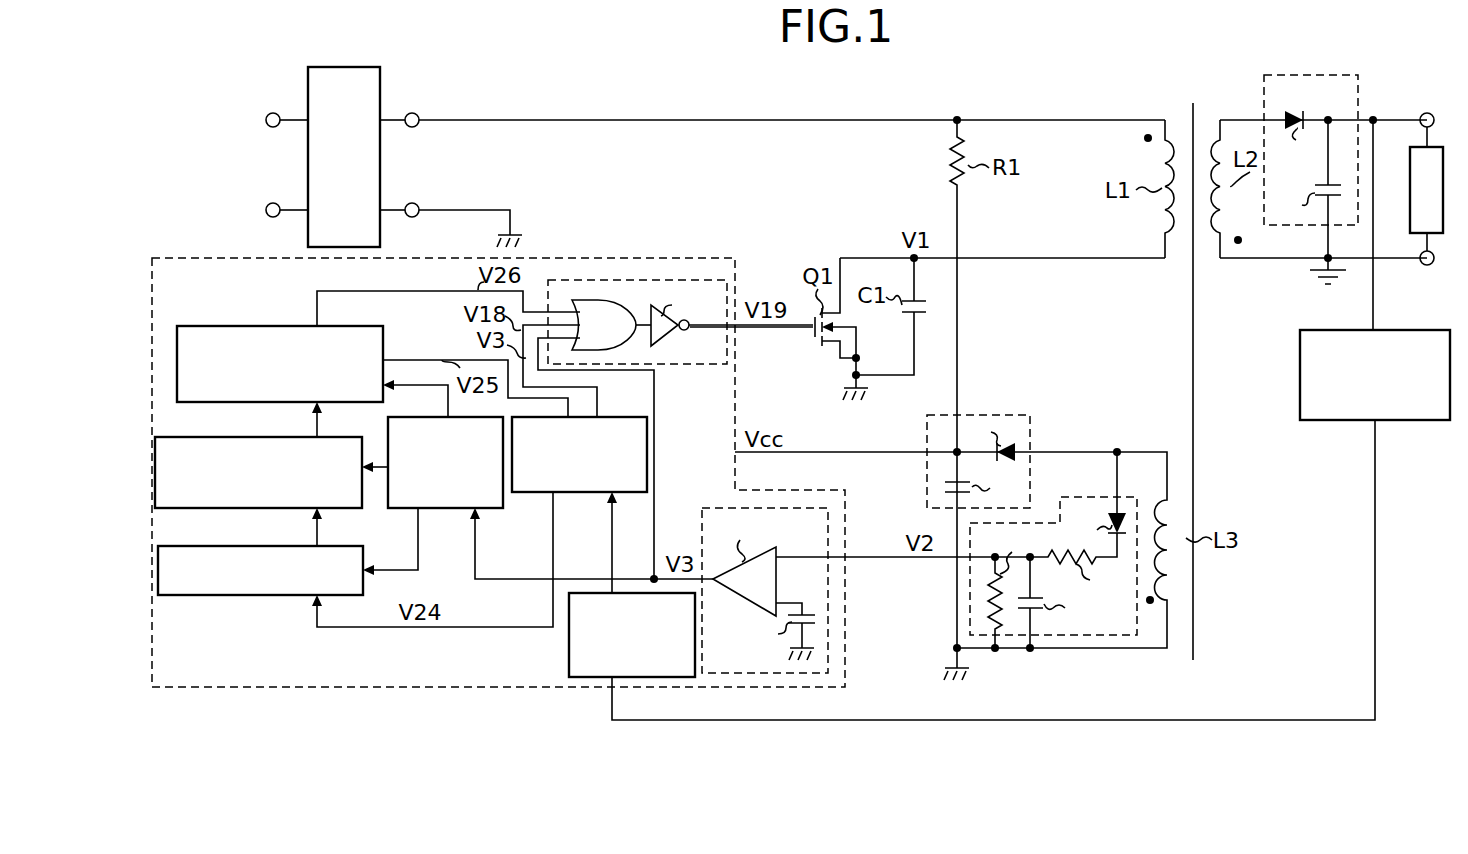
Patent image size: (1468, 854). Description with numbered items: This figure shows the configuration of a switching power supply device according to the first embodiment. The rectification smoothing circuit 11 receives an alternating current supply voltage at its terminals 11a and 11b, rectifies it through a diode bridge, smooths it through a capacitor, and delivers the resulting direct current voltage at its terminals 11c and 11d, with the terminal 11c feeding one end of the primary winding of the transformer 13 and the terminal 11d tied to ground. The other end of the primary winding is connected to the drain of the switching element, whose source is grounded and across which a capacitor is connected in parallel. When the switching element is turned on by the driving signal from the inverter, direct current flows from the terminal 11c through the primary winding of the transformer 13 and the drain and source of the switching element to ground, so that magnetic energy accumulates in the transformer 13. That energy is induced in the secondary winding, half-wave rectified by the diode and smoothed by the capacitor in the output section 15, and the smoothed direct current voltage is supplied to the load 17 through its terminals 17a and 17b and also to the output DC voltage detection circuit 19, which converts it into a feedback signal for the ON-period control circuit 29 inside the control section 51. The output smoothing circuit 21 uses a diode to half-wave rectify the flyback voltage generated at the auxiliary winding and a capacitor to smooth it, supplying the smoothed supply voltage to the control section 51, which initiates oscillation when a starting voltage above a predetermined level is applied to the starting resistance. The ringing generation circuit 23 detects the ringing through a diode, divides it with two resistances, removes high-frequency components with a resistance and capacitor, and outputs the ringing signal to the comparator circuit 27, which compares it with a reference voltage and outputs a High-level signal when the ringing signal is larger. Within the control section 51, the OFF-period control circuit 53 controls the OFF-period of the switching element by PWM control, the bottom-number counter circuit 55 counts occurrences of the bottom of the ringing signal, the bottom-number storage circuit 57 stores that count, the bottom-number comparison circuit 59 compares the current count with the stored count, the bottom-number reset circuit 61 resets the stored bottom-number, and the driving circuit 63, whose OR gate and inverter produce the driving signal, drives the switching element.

The rectification smoothing circuit 11 is at (345, 67).
The input terminal 11a is at (273, 113).
The input terminal 11b is at (273, 203).
The terminal 11c is at (417, 113).
The output terminal 11d is at (417, 203).
The transformer 13 is at (1193, 105).
The output rectification smoothing circuit 15 is at (1303, 75).
The load 17 is at (1410, 205).
The output terminal 17a is at (1428, 113).
The output terminal 17b is at (1425, 266).
The output DC voltage detection circuit 19 is at (1329, 422).
The output smoothing circuit 21 is at (1004, 415).
The ringing generation circuit 23 is at (1103, 638).
The comparator circuit 27 is at (712, 506).
The ON-period control circuit 29 is at (569, 654).
The control section 51 is at (610, 258).
The OFF-period control circuit 53 is at (580, 493).
The bottom-number counter circuit 55 is at (398, 509).
The bottom-number storage circuit 57 is at (212, 437).
The bottom-number comparison circuit 59 is at (210, 326).
The bottom-number reset circuit 61 is at (190, 596).
The driving circuit 63 is at (684, 365).